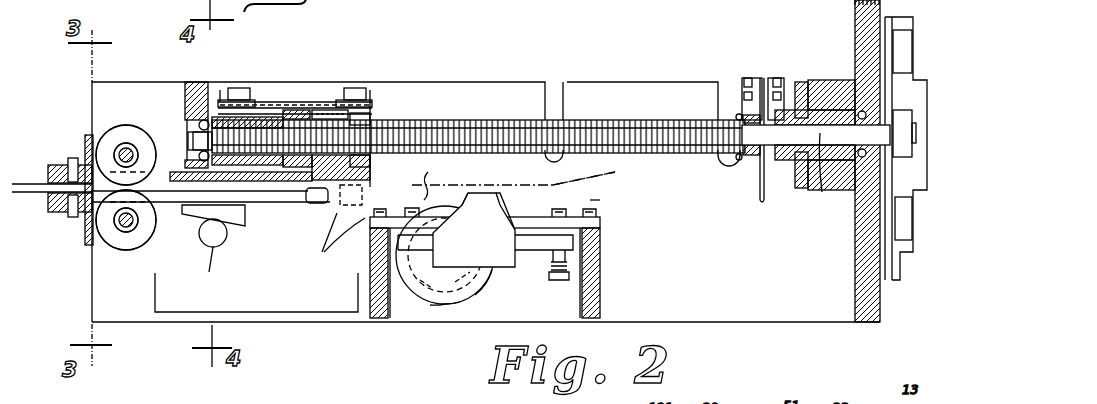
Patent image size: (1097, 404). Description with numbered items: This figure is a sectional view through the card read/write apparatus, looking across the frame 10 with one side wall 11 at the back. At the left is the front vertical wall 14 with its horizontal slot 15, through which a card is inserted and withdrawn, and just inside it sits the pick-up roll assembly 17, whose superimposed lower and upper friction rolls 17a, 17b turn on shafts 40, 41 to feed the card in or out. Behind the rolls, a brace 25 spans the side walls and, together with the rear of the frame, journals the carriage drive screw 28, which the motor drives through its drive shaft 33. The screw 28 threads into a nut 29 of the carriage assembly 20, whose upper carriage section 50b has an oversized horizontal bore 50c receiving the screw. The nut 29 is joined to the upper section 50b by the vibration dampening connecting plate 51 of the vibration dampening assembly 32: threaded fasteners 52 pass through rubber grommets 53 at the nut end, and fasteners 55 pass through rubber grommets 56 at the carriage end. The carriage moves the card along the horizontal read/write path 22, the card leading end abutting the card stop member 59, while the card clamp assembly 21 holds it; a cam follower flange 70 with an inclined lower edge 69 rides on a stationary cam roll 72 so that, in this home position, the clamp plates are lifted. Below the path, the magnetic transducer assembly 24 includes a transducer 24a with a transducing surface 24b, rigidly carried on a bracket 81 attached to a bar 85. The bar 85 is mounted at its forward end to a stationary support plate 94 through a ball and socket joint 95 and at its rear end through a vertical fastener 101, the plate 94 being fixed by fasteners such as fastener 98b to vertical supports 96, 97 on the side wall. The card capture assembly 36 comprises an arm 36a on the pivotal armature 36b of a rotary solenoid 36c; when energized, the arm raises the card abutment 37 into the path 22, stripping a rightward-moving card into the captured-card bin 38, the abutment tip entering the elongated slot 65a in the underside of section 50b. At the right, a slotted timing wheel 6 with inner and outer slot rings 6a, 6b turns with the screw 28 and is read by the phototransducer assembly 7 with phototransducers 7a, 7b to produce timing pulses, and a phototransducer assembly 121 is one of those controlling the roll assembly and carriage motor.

The slotted timing wheel 6 is at (760, 200).
The inner annular ring of slots 6a is at (748, 100).
The outer annular ring of slots 6b is at (763, 76).
The phototransducer assembly 7 is at (785, 66).
The slot-sensing phototransducer 7a is at (744, 90).
The slot-sensing phototransducer 7b is at (742, 78).
The frame 10 is at (888, 308).
The side wall 11 is at (467, 88).
The front vertical wall 14 is at (85, 247).
The horizontal slot 15 is at (50, 188).
The pick-up roll assembly 17 is at (138, 98).
The lower friction roll 17a is at (125, 250).
The upper friction roll 17b is at (103, 137).
The carriage assembly 20 is at (393, 111).
The card clamp assembly 21 is at (260, 206).
The read/write path 22 is at (620, 174).
The magnetic transducer assembly 24 is at (630, 222).
The transducer 24a is at (500, 196).
The transducing surface 24b is at (468, 196).
The brace 25 is at (200, 86).
The carriage drive screw 28 is at (599, 124).
The nut 29 is at (267, 117).
The vibration dampening assembly 32 is at (328, 110).
The drive shaft 33 is at (820, 192).
The card capture assembly 36 is at (423, 307).
The arm 36a is at (460, 326).
The pivotal armature 36b is at (486, 293).
The rotary solenoid 36c is at (446, 306).
The card abutment 37 is at (337, 241).
The captured-card bin 38 is at (311, 310).
The shaft 40 is at (128, 223).
The shaft 41 is at (128, 152).
The upper carriage section 50b is at (372, 173).
The horizontal bore 50c is at (333, 114).
The vibration dampening connecting plate 51 is at (315, 100).
The threaded fastener 52 is at (240, 88).
The rubber grommet 53 is at (221, 92).
The fastener 55 is at (372, 92).
The rubber grommet 56 is at (392, 114).
The card stop member 59 is at (315, 204).
The elongated slot 65a is at (428, 190).
The inclined lower edge 69 is at (198, 228).
The cam follower flange 70 is at (233, 226).
The cam roll 72 is at (210, 272).
The bracket 81 is at (502, 266).
The bar 85 is at (442, 246).
The support plate 94 is at (540, 216).
The ball and socket joint 95 is at (438, 185).
The vertical support 96 is at (378, 320).
The vertical support 97 is at (603, 300).
The fastener 98b is at (600, 204).
The fastener 101 is at (562, 281).
The phototransducer assembly 121 is at (70, 160).